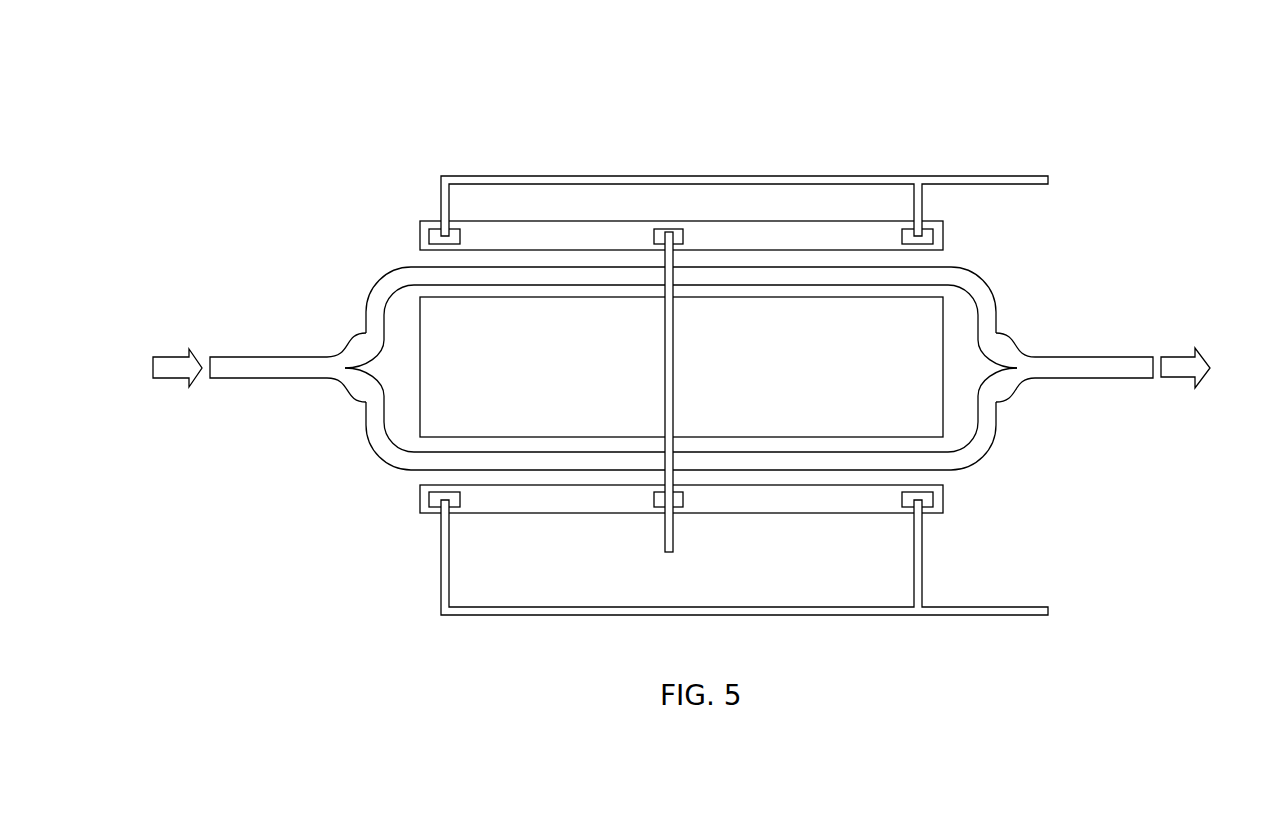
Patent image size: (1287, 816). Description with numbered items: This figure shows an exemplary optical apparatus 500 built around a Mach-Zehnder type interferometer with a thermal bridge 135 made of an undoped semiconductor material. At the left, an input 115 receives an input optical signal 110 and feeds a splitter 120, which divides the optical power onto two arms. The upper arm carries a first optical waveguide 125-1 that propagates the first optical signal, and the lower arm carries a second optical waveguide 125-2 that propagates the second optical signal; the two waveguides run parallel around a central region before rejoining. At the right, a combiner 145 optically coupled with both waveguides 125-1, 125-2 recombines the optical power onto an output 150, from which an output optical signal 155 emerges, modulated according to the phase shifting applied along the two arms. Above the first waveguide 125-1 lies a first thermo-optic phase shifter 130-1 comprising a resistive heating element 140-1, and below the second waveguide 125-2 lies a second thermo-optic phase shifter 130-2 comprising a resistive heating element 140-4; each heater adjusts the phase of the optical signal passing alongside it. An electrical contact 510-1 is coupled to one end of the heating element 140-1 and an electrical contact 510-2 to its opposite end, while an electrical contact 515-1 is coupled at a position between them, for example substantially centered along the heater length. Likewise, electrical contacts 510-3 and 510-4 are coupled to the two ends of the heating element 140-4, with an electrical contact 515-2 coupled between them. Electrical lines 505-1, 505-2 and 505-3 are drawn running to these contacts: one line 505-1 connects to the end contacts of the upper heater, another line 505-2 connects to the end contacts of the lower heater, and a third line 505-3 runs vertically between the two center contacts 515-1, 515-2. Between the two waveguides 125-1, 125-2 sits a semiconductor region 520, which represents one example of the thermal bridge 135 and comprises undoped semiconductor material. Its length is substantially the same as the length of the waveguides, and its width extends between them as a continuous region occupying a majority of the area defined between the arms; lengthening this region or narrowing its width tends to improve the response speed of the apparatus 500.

The optical apparatus 500 is at (681, 360).
The input optical signal 110 is at (163, 380).
The input 115 is at (253, 378).
The splitter 120 is at (348, 390).
The first optical waveguide 125-1 is at (803, 275).
The second optical waveguide 125-2 is at (545, 462).
The first thermo-optic phase shifter 130-1 is at (749, 193).
The second thermo-optic phase shifter 130-2 is at (711, 578).
The thermal bridge 135 is at (943, 322).
The resistive heating element 140-1 is at (699, 193).
The resistive heating element 140-4 is at (672, 534).
The combiner 145 is at (1015, 392).
The output 150 is at (1063, 365).
The output optical signal 155 is at (1178, 380).
The first electrical bus line 505-1 is at (1038, 177).
The second electrical bus line 505-2 is at (1028, 615).
The third electrical bus line 505-3 is at (672, 537).
The electrical contact 510-1 is at (435, 234).
The electrical contact 510-2 is at (927, 235).
The electrical contact 510-3 is at (432, 498).
The electrical contact 510-4 is at (928, 502).
The electrical contact 515-1 is at (680, 230).
The electrical contact 515-2 is at (680, 500).
The semiconductor region 520 is at (760, 349).